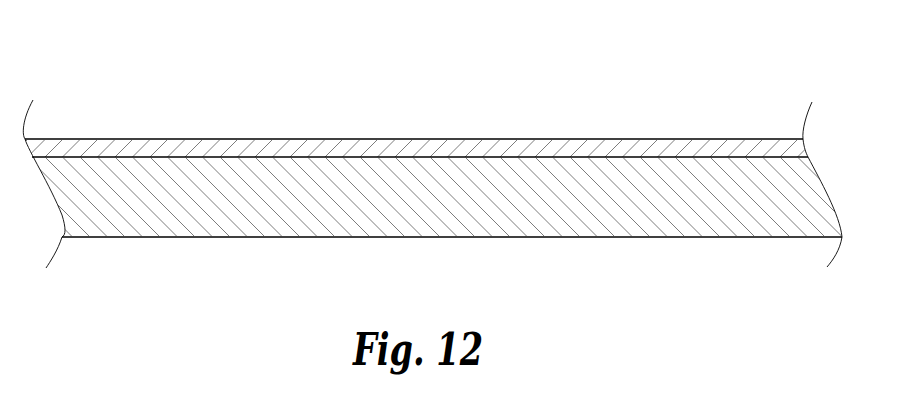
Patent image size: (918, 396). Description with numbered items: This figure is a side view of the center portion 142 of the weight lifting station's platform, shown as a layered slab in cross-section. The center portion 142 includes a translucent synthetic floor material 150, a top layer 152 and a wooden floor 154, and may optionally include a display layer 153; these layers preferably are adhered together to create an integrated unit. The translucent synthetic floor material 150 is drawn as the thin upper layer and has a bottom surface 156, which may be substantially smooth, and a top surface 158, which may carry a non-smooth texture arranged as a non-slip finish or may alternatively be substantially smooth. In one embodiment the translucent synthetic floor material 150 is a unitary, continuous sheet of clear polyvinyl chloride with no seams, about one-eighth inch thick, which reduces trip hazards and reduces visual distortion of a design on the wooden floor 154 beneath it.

The center portion 142 is at (198, 84).
The translucent synthetic floor material 150 is at (690, 147).
The top layer 152 is at (157, 158).
The display layer 153 is at (280, 159).
The wooden floor 154 is at (315, 203).
The bottom surface 156 is at (564, 157).
The top surface 158 is at (610, 137).